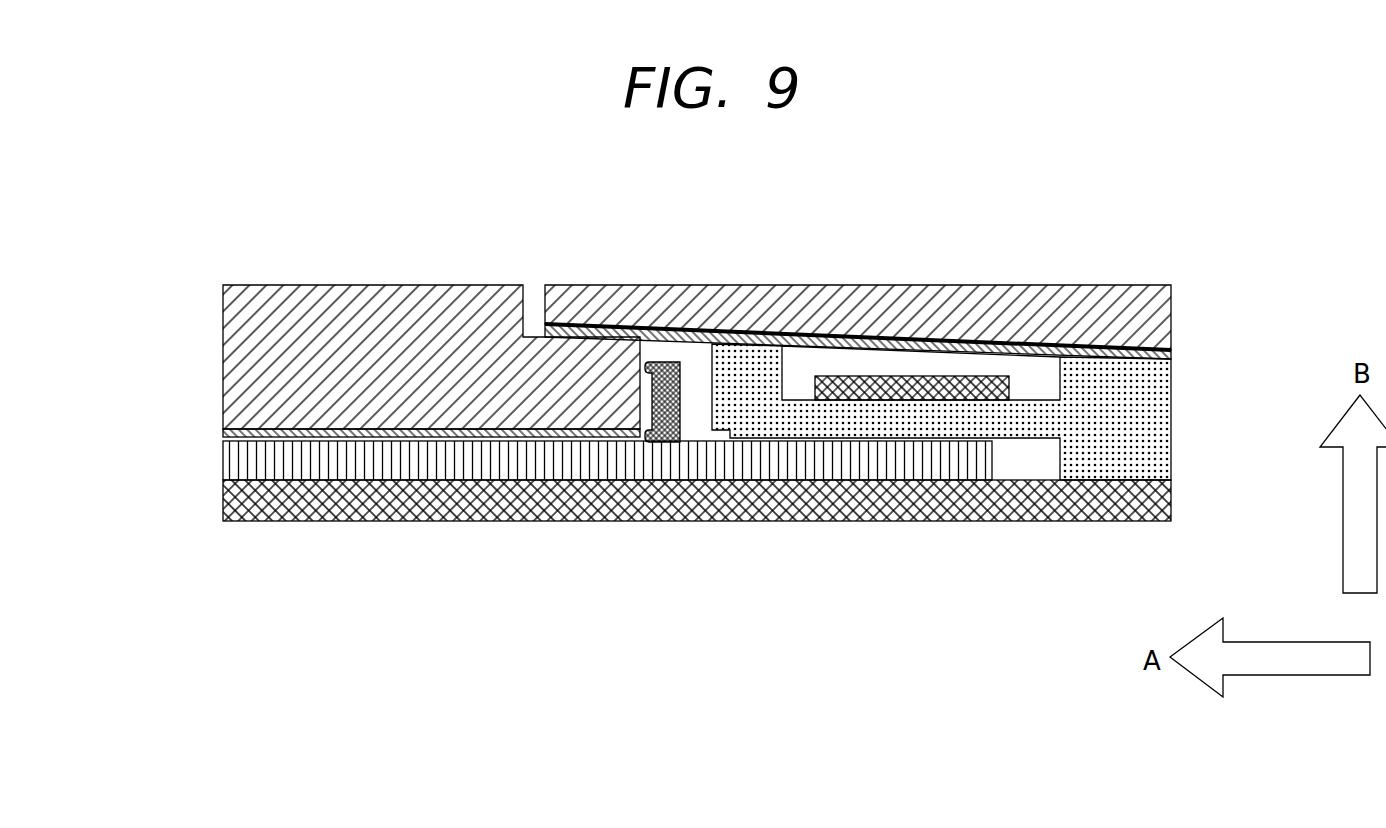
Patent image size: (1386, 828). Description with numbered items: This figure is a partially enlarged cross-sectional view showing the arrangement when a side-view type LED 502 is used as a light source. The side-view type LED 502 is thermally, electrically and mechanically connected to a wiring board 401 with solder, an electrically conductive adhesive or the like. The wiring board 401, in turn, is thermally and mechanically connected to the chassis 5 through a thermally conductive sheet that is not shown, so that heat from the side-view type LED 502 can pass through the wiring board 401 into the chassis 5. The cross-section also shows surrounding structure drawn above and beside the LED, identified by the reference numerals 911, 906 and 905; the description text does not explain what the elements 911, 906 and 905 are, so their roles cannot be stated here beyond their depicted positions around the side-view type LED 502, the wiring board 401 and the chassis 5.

The housing member 911 is at (325, 307).
The thin layer / sheet 906 is at (223, 433).
The contact element 905 is at (882, 387).
The side-view type LED 502 is at (658, 443).
The wiring board 401 is at (832, 466).
The chassis 5 is at (459, 498).